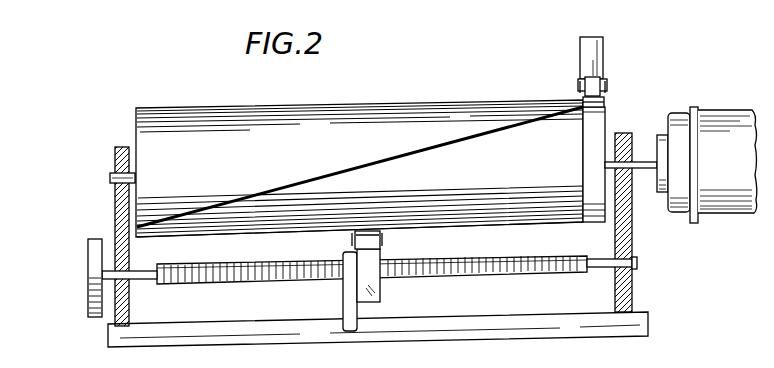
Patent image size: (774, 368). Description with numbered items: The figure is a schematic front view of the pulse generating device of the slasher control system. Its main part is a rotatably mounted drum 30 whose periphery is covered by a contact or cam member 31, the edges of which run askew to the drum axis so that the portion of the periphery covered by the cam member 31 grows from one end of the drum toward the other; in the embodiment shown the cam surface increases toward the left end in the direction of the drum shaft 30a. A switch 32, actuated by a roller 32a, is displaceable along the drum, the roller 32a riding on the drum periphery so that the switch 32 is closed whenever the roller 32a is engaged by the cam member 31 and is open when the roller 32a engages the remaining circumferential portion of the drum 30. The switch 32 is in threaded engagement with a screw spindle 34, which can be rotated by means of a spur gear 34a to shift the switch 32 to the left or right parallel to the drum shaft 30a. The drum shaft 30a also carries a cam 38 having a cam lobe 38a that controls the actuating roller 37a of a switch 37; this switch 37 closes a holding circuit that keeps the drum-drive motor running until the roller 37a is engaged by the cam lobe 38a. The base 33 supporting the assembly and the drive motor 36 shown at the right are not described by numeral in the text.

The drum 30 is at (505, 148).
The drum shaft 30a is at (114, 174).
The cam member 31 is at (425, 125).
The switch 32 is at (371, 285).
The roller 32a is at (382, 236).
The base 33 is at (292, 333).
The screw spindle 34 is at (270, 281).
The spur gear 34a is at (92, 270).
The motor 36 is at (723, 120).
The switch 37 is at (597, 45).
The actuating roller 37a is at (608, 82).
The cam 38 is at (597, 130).
The cam lobe 38a is at (604, 100).